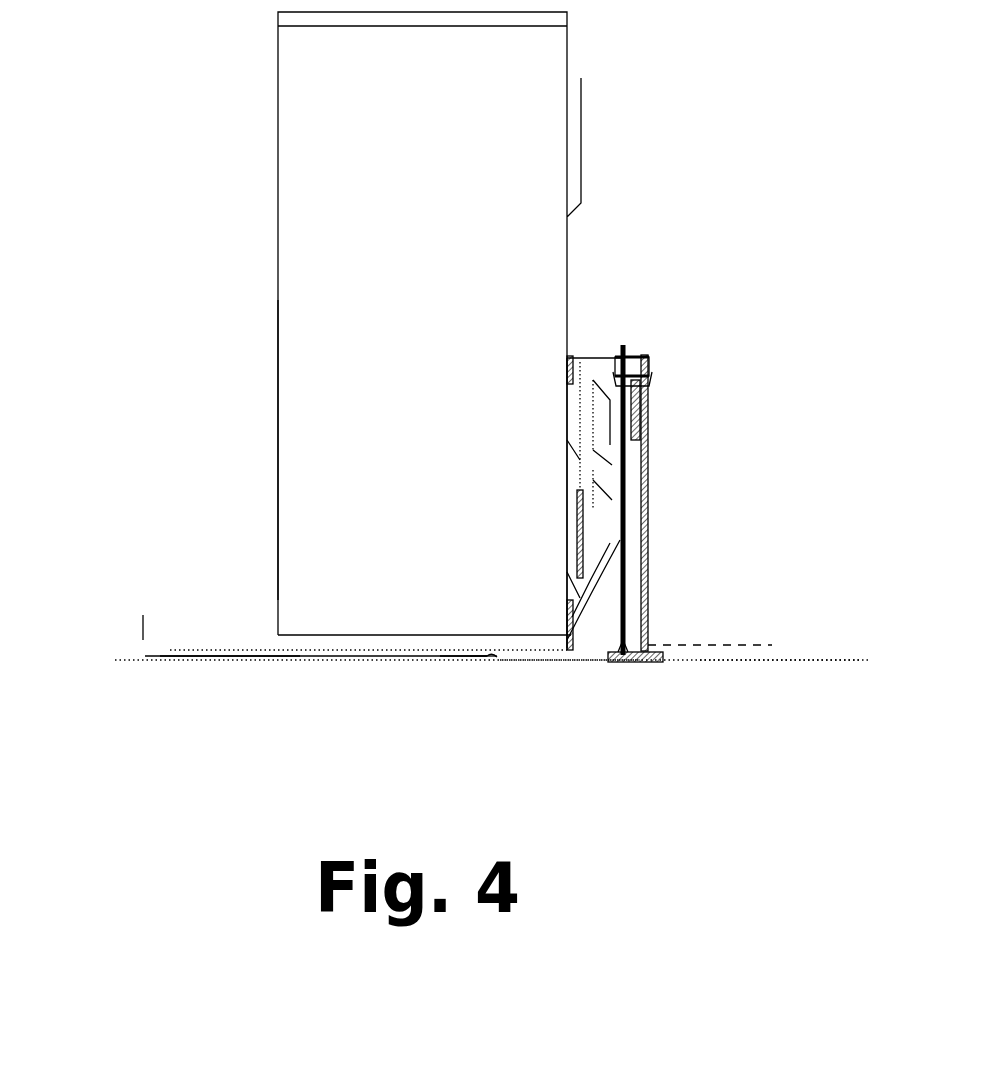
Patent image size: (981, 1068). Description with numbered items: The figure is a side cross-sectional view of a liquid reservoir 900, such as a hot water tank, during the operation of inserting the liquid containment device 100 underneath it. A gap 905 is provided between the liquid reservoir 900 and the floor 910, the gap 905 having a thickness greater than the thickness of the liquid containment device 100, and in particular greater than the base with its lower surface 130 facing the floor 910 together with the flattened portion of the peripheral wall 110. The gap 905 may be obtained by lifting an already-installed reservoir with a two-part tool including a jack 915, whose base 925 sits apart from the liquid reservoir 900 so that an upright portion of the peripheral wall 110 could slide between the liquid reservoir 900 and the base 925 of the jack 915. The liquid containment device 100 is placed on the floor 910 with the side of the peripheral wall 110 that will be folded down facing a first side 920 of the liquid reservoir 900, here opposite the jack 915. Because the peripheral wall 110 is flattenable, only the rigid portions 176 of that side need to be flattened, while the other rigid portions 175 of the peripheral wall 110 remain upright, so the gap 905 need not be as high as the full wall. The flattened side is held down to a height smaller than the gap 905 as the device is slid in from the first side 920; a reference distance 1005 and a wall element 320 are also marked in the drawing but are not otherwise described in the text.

The liquid reservoir 900 is at (545, 270).
The cabinet side wall 320 is at (278, 452).
The peripheral wall 110 is at (147, 651).
The rigid portions 175 is at (143, 637).
The liquid containment device 100 is at (184, 656).
The lower surface 130 is at (461, 660).
The rigid portions 176 is at (478, 661).
The gap 905 is at (533, 660).
The gap distance 1005 is at (779, 638).
The floor 910 is at (850, 660).
The first side 920 is at (567, 497).
The jack 915 is at (646, 557).
The base 925 is at (645, 645).